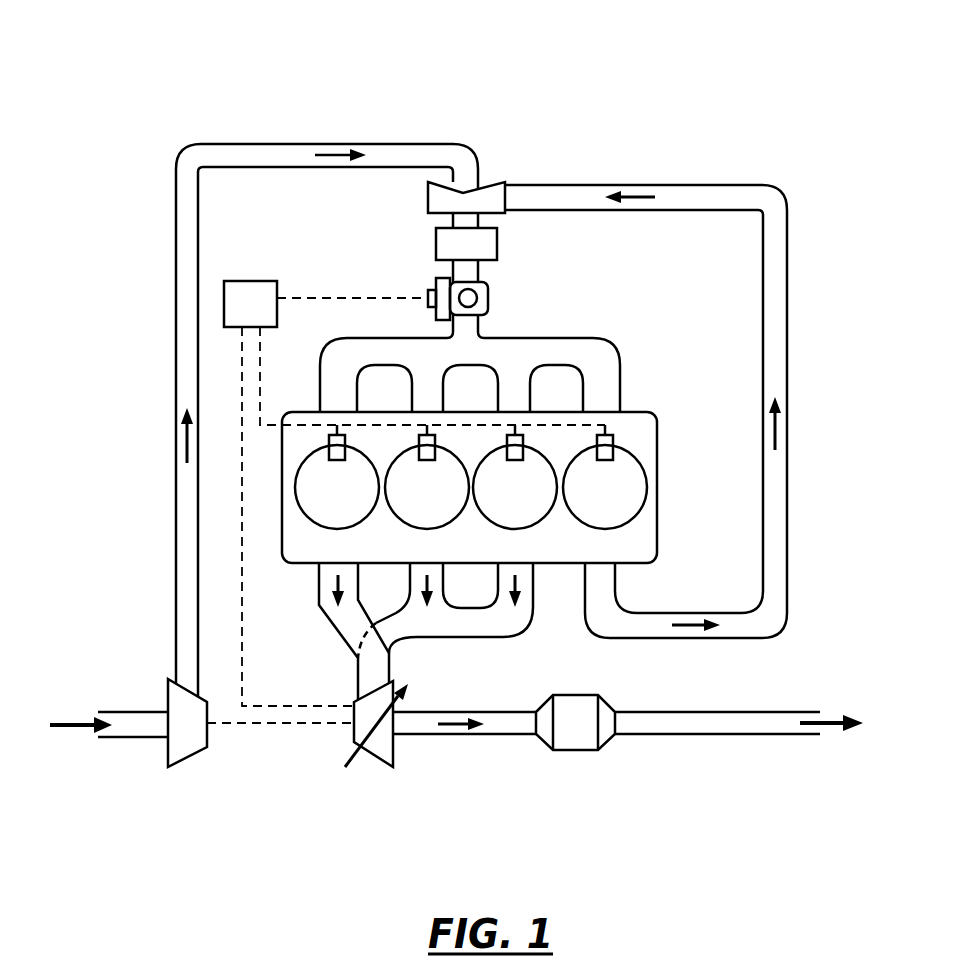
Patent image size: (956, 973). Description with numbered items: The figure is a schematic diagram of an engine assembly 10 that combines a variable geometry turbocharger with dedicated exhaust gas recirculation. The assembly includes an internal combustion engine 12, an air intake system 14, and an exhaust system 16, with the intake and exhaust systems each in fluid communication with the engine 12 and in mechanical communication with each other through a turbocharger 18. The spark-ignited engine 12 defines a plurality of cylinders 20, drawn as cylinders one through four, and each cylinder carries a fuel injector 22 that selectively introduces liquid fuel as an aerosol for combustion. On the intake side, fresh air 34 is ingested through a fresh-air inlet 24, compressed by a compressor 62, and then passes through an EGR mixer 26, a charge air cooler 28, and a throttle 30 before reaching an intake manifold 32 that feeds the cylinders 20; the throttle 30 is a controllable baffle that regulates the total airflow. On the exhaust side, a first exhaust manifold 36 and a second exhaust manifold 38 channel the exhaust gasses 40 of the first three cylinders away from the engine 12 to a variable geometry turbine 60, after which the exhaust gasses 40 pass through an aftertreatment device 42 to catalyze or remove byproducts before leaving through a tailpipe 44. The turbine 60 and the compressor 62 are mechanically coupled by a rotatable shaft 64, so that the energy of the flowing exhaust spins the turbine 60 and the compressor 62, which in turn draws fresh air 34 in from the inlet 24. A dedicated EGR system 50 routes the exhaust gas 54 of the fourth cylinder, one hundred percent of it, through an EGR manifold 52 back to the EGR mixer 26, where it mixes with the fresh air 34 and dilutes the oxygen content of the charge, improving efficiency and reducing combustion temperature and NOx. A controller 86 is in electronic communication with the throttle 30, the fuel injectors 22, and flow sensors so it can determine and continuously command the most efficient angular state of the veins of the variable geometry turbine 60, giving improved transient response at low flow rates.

The engine assembly 10 is at (106, 50).
The internal combustion engine 12 is at (657, 447).
The air intake system 14 is at (136, 134).
The exhaust system 16 is at (529, 829).
The turbocharger 18 is at (283, 827).
The cylinders 20 is at (640, 552).
The fuel injectors 22 is at (330, 443).
The fresh-air inlet 24 is at (112, 738).
The EGR mixer 26 is at (497, 182).
The charge air cooler 28 is at (497, 243).
The throttle 30 is at (490, 298).
The intake manifold 32 is at (586, 336).
The fresh air 34 is at (185, 447).
The first exhaust manifold 36 is at (318, 597).
The second exhaust manifold 38 is at (450, 638).
The exhaust gasses 40 is at (532, 592).
The aftertreatment device 42 is at (587, 751).
The tailpipe 44 is at (785, 736).
The dedicated EGR system 50 is at (840, 423).
The EGR manifold 52 is at (635, 639).
The exhaust gas 54 is at (775, 437).
The variable geometry turbine 60 is at (380, 766).
The compressor 62 is at (182, 765).
The rotatable shaft 64 is at (272, 725).
The controller 86 is at (414, 493).